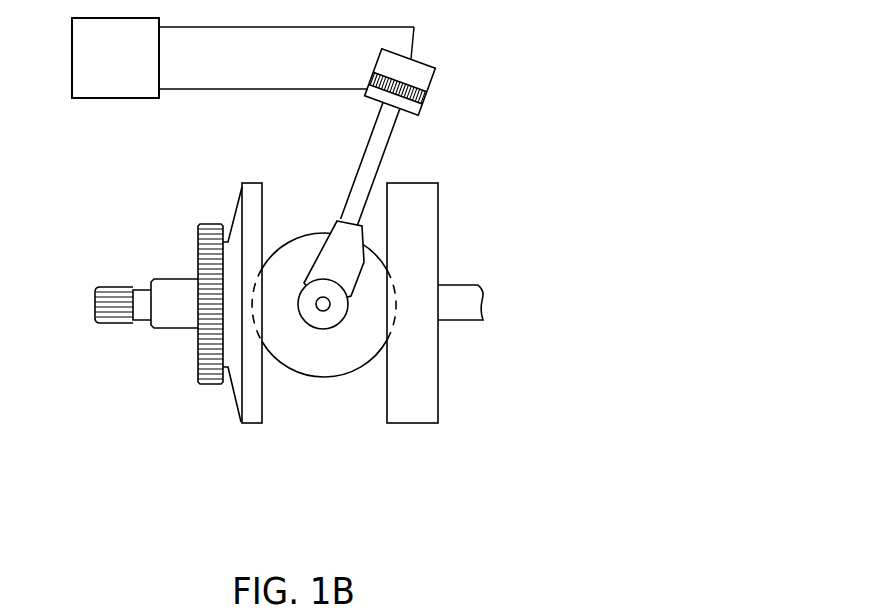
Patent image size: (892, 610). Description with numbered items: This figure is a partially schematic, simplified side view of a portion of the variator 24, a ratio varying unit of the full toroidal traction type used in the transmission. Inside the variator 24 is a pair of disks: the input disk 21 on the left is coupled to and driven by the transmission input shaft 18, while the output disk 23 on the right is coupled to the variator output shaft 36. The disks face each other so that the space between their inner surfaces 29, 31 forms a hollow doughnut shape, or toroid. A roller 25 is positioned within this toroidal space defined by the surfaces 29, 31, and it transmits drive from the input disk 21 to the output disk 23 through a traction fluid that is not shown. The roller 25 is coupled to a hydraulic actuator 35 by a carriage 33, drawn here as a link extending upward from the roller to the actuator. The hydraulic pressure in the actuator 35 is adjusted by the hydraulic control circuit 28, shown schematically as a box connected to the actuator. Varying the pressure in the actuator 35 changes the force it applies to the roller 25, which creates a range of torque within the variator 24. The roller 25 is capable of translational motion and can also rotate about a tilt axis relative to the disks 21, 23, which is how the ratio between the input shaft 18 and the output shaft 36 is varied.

The transmission input shaft 18 is at (166, 329).
The input disk 21 is at (277, 278).
The output disk 23 is at (403, 322).
The variator 24 is at (265, 336).
The roller 25 is at (323, 378).
The hydraulic control circuit 28 is at (133, 73).
The inner surface of the input disk 29 is at (258, 220).
The inner surface of the output disk 31 is at (413, 412).
The carriage 33 is at (343, 228).
The hydraulic actuator 35 is at (470, 75).
The variator output shaft 36 is at (461, 288).